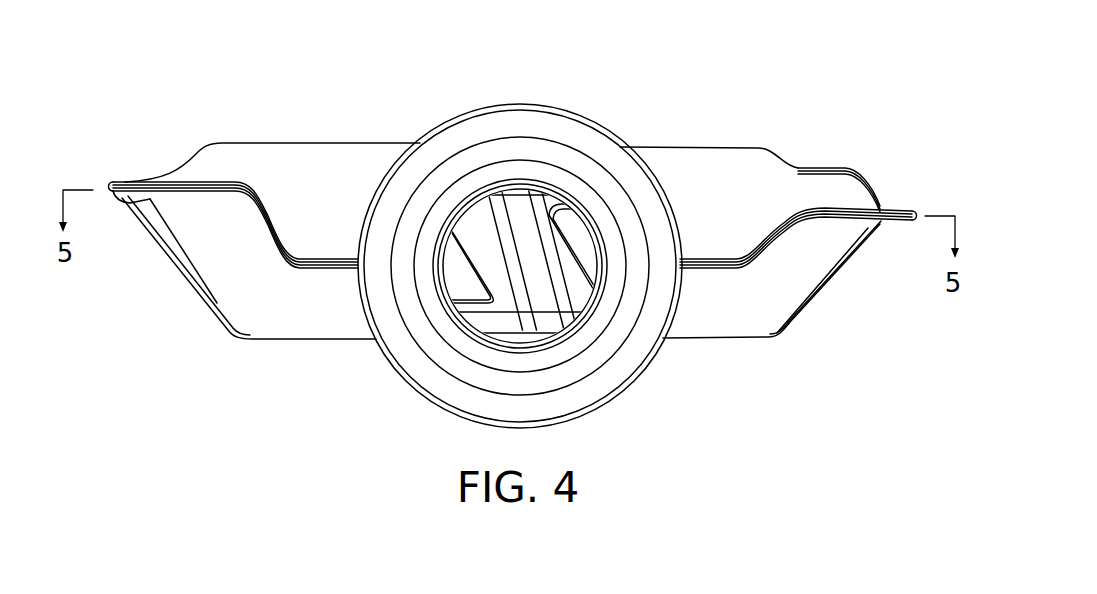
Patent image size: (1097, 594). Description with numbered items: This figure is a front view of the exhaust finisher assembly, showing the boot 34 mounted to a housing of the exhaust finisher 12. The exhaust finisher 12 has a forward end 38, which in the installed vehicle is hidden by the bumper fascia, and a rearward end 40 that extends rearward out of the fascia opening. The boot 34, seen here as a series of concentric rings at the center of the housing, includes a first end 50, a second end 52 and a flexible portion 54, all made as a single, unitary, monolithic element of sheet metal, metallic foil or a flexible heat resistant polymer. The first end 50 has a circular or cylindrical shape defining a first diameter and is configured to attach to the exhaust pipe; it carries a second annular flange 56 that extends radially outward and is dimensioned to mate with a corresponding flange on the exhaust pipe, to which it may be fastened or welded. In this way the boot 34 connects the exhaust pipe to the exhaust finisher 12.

The exhaust finisher 12 is at (752, 86).
The boot 34 is at (592, 146).
The forward end 38 is at (320, 183).
The rearward end 40 is at (118, 181).
The first end 50 is at (607, 277).
The second end 52 is at (460, 118).
The flexible portion 54 is at (542, 140).
The second annular flange 56 is at (452, 338).